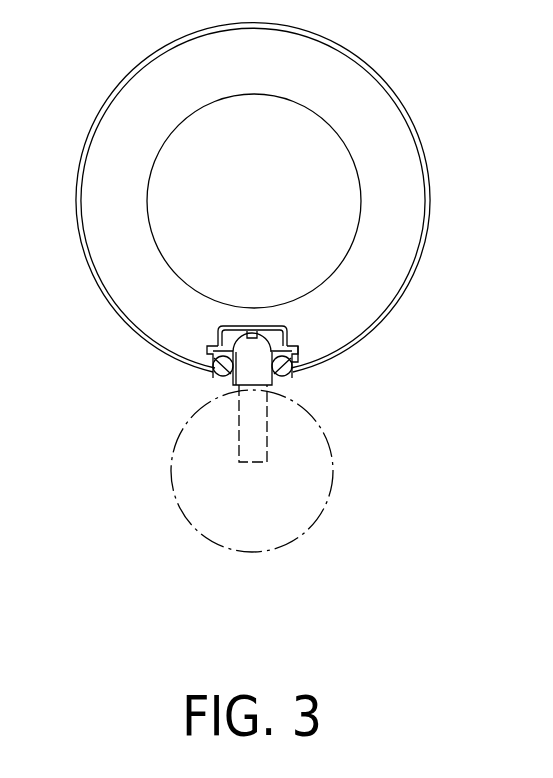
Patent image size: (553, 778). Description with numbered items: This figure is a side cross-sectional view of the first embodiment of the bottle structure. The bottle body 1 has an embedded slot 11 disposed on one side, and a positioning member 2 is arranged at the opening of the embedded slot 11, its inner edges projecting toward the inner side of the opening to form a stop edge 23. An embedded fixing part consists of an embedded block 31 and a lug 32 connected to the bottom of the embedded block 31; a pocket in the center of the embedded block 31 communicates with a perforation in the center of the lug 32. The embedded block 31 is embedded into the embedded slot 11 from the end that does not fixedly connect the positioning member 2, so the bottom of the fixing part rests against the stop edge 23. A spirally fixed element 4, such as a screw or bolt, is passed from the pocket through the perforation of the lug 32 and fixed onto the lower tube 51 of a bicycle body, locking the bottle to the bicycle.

The bottle body 1 is at (427, 158).
The embedded slot 11 is at (290, 377).
The positioning member 2 is at (208, 348).
The stop edge 23 is at (216, 377).
The embedded block 31 is at (232, 342).
The lug 32 is at (233, 386).
The spirally fixed element 4 is at (257, 352).
The lower tube 51 is at (313, 467).